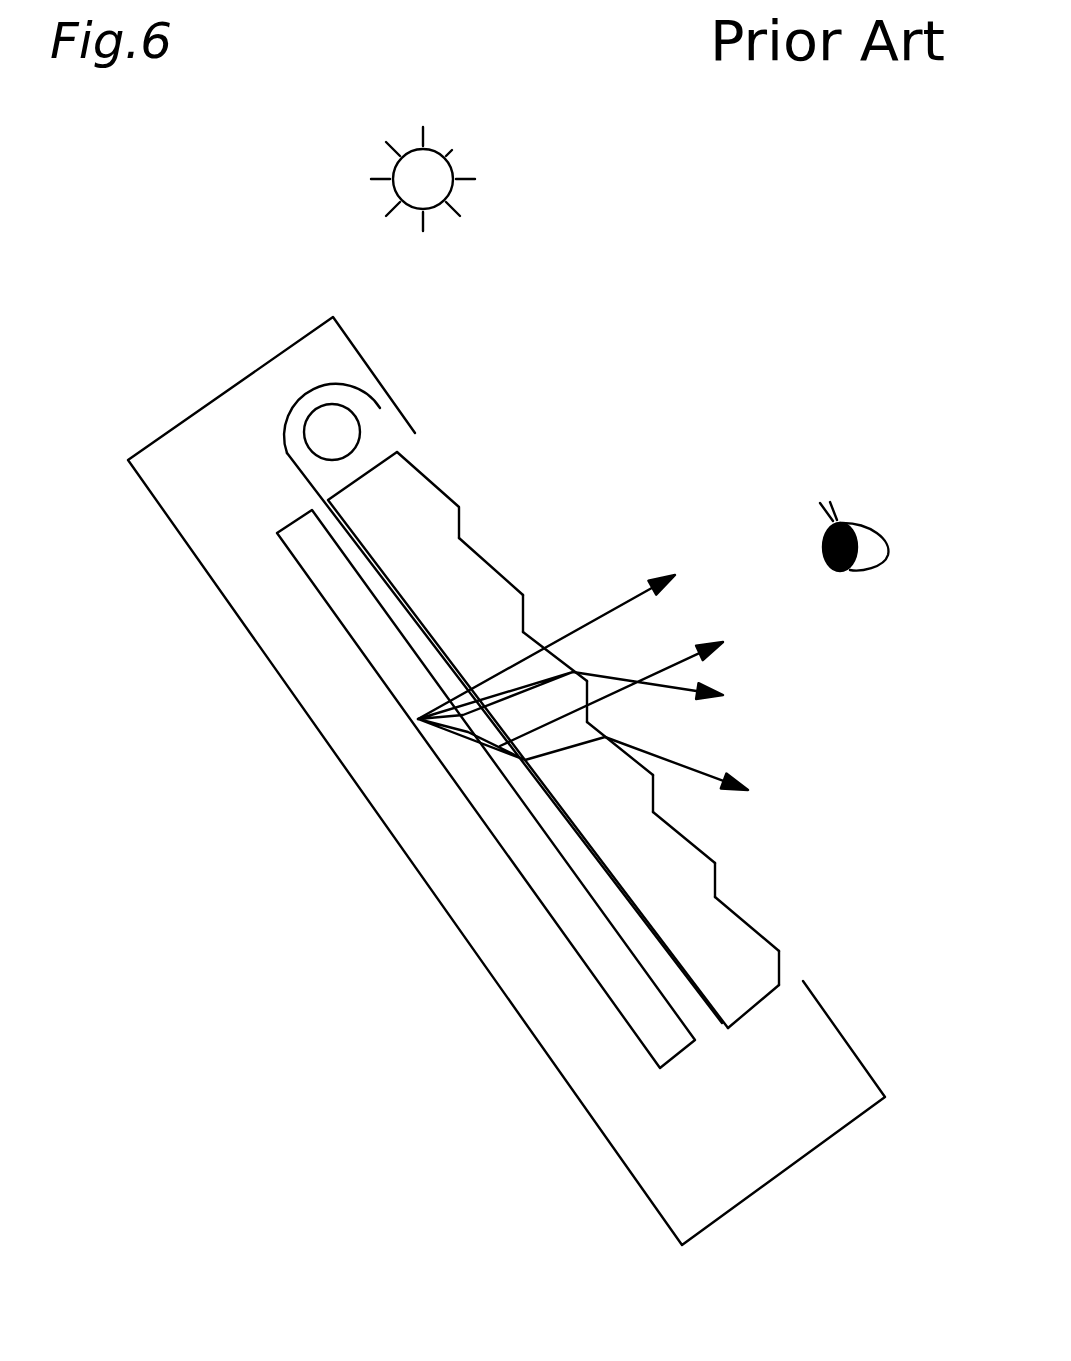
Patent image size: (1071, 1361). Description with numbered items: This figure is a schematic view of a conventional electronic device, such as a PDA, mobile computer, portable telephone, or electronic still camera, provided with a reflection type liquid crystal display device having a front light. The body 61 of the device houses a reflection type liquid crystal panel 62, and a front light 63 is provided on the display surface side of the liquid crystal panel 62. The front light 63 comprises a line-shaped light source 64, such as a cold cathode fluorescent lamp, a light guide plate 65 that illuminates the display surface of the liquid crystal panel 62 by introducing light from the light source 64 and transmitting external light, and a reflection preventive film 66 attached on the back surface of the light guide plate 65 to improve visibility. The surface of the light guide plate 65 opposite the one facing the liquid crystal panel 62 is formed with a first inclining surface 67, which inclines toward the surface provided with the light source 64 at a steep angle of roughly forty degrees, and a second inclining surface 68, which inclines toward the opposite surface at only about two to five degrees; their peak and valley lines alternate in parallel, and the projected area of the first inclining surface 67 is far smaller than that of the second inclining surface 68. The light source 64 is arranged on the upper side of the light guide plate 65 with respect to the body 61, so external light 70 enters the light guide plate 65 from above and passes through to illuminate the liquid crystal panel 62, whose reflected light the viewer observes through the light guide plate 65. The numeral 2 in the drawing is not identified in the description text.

The light guide strip 2 is at (525, 874).
The body 61 is at (203, 569).
The reflection type liquid crystal panel 62 is at (349, 622).
The front light 63 is at (432, 443).
The line-shaped light source 64 is at (308, 447).
The light guide plate 65 is at (753, 1005).
The reflection preventive film 66 is at (722, 1023).
The first inclining surface 67 is at (462, 527).
The second inclining surface 68 is at (502, 574).
The external light 70 is at (448, 176).